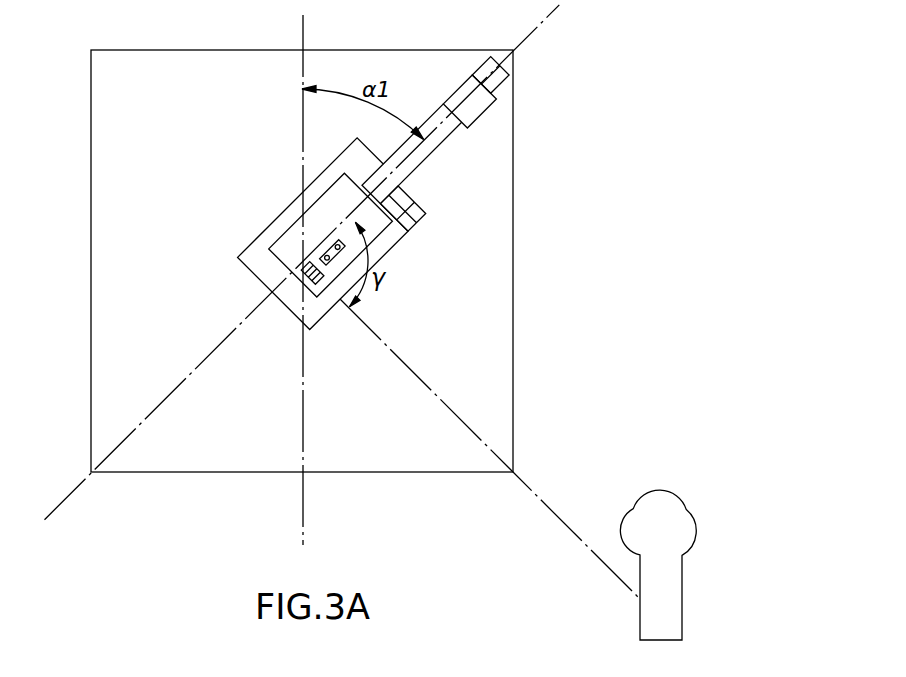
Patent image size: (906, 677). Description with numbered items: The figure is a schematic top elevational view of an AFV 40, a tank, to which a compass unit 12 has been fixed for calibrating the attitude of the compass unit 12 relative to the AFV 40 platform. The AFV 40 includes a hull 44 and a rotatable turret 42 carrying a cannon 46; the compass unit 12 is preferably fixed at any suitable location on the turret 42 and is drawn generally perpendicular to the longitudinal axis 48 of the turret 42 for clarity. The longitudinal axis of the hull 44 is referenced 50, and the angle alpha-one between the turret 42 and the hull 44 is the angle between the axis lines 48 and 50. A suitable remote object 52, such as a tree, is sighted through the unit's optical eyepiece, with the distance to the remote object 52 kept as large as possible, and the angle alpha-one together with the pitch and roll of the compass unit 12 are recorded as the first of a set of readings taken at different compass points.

The AFV 40 is at (157, 82).
The compass unit 12 is at (248, 240).
The cannon 46 is at (450, 130).
The rotatable turret 42 is at (423, 213).
The hull 44 is at (490, 414).
The longitudinal axis of the turret 48 is at (135, 437).
The longitudinal axis of the AFV hull 50 is at (305, 510).
The remote object 52 is at (682, 598).